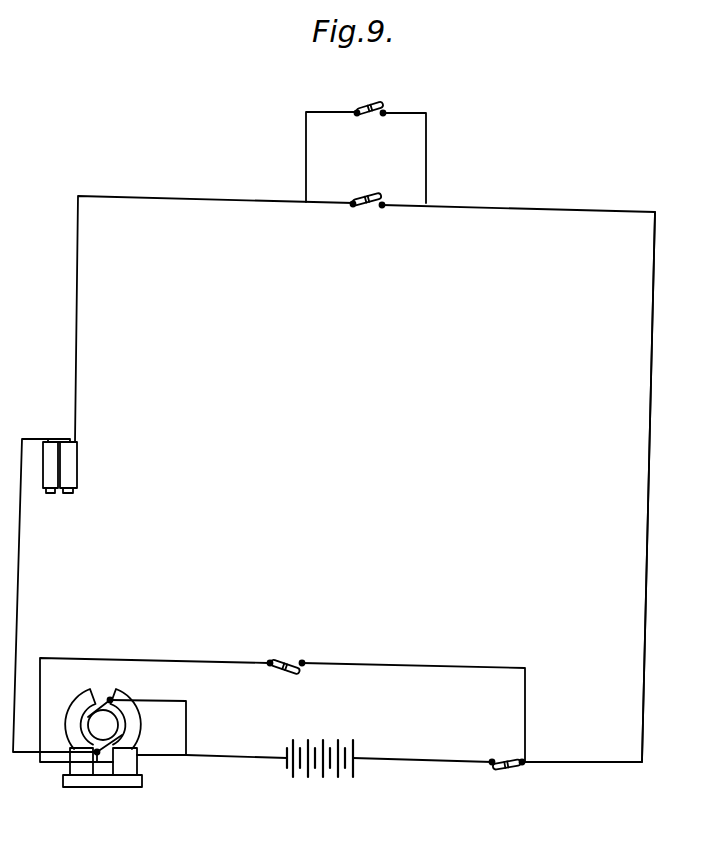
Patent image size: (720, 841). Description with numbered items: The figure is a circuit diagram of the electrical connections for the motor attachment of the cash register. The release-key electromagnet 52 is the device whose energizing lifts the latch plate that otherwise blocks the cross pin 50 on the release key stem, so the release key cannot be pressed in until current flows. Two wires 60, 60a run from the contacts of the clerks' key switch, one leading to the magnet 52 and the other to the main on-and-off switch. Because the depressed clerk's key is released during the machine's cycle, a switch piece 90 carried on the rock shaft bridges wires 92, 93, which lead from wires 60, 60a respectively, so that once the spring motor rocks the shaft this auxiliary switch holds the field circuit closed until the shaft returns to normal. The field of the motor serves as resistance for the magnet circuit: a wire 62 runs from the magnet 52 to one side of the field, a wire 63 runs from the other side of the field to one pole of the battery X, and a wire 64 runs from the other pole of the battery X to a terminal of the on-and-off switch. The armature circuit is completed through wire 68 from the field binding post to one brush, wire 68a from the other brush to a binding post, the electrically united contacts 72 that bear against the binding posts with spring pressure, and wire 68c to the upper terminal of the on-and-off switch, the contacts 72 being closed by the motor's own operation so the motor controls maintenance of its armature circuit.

The cross pin 50 is at (370, 184).
The electromagnet 52 is at (70, 468).
The wire 60 is at (77, 305).
The wire 60a is at (648, 465).
The wire 62 is at (20, 577).
The wire 63 is at (230, 758).
The wire 64 is at (500, 772).
The wire 68 is at (186, 731).
The wire 68a is at (103, 658).
The wire 68c is at (425, 660).
The contacts 72 is at (281, 660).
The switch piece 90 is at (377, 101).
The wire 92 is at (306, 137).
The wire 93 is at (427, 149).
The battery X is at (389, 775).